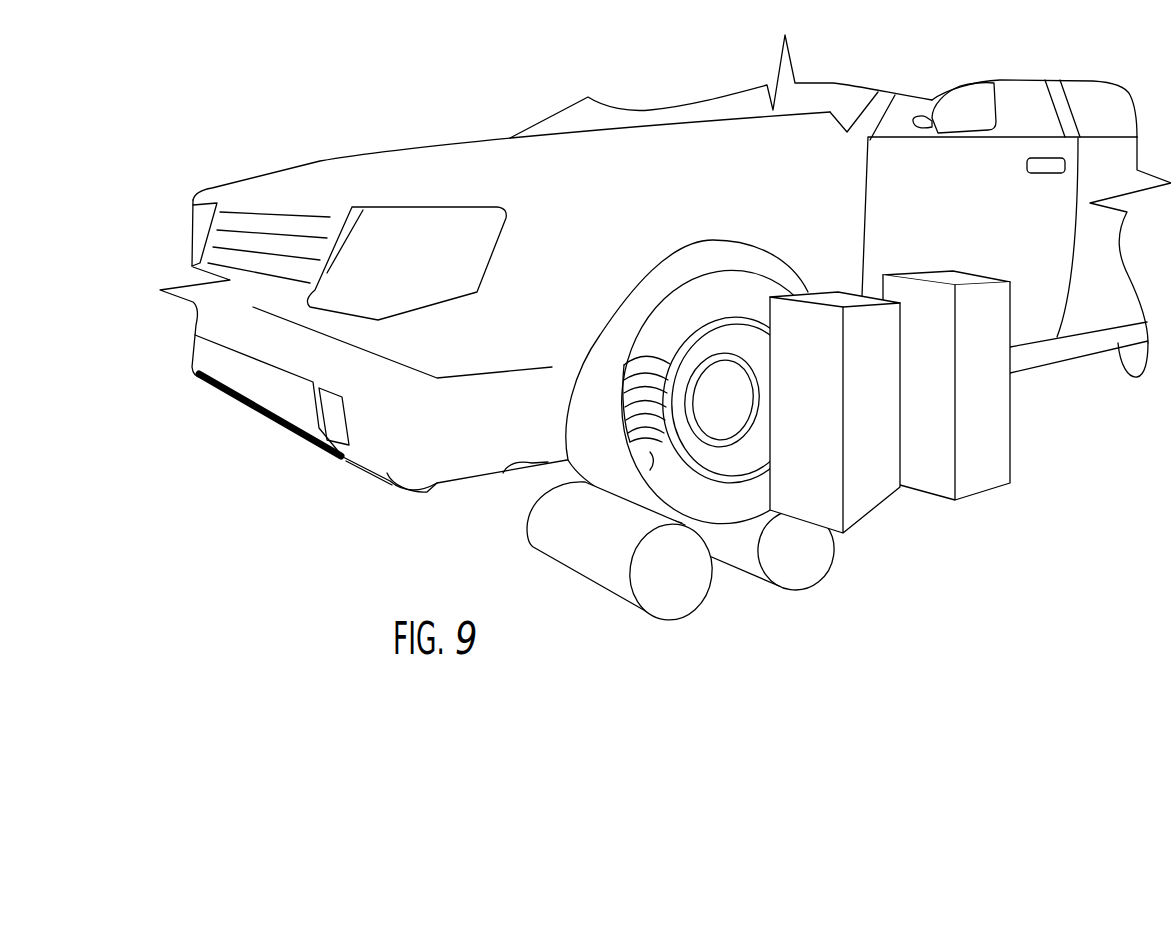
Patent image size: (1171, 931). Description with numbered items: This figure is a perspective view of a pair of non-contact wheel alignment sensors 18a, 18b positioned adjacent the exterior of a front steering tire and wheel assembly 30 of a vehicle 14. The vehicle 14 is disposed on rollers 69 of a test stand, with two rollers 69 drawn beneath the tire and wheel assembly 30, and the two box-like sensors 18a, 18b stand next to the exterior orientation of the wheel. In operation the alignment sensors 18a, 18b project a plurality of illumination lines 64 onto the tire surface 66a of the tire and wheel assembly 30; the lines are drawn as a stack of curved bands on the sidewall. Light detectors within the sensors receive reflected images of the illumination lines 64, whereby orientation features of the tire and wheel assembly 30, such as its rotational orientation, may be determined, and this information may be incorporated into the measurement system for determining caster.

The vehicle 14 is at (442, 178).
The tire and wheel assembly 30 is at (740, 288).
The illumination lines 64 is at (648, 360).
The tire surface 66a is at (545, 479).
The rollers 69 is at (672, 588).
The non-contact wheel alignment sensor 18a is at (889, 495).
The non-contact wheel alignment sensor 18b is at (993, 455).